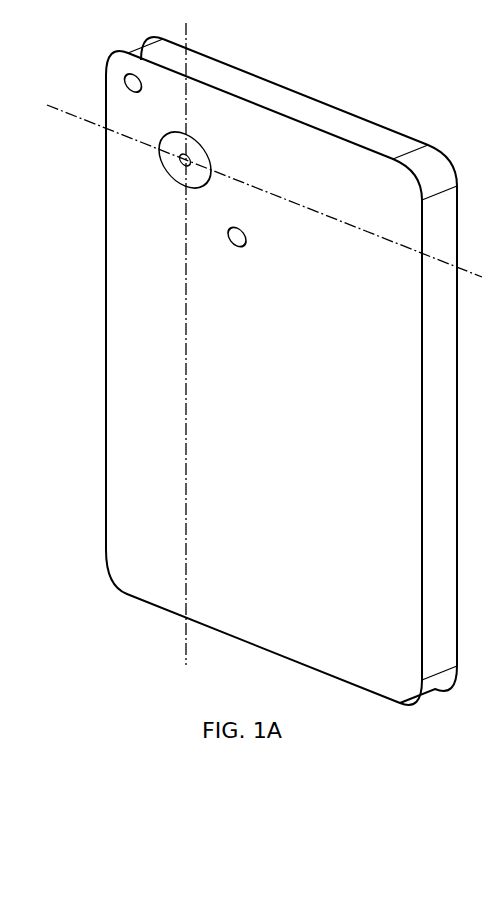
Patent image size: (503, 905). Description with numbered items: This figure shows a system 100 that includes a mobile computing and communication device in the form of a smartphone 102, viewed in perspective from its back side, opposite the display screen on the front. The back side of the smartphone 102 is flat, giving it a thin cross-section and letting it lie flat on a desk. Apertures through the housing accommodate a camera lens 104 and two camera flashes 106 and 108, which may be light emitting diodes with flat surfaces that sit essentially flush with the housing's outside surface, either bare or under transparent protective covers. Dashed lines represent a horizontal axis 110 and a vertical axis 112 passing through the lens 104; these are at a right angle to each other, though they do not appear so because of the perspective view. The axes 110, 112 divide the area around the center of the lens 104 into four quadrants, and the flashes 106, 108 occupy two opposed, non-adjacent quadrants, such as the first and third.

The system 100 is at (367, 68).
The smartphone 102 is at (107, 325).
The camera lens 104 is at (163, 172).
The camera flash 106 is at (125, 78).
The camera flash 108 is at (228, 240).
The horizontal axis 110 is at (85, 122).
The vertical axis 112 is at (184, 342).